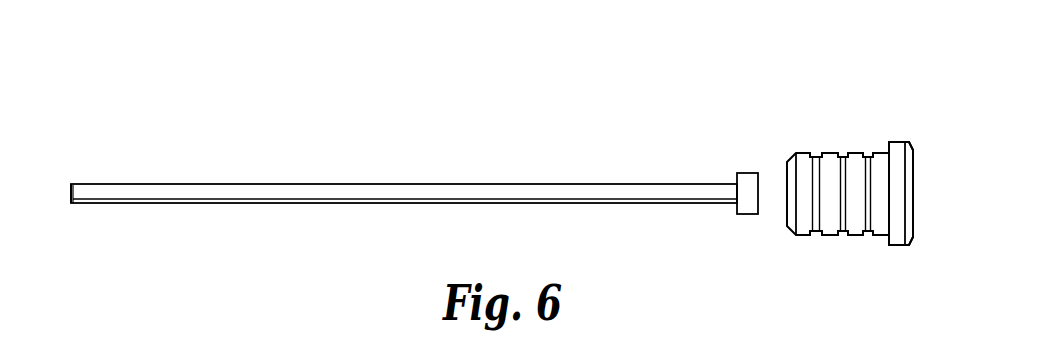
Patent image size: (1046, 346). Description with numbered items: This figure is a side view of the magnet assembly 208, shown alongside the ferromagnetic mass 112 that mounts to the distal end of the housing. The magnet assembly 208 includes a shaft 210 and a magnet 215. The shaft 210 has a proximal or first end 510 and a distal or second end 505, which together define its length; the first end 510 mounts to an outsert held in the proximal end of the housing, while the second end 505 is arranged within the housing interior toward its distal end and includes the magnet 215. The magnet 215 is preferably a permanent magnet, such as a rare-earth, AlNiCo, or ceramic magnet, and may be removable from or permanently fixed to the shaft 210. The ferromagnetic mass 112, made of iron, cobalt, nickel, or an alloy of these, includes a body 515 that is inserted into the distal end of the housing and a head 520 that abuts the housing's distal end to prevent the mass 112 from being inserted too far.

The magnet assembly 208 is at (409, 163).
The shaft 210 is at (270, 205).
The magnet 215 is at (743, 172).
The first end 510 is at (76, 214).
The second end 505 is at (787, 179).
The body 515 is at (815, 155).
The ferromagnetic mass 112 is at (882, 153).
The head 520 is at (913, 247).